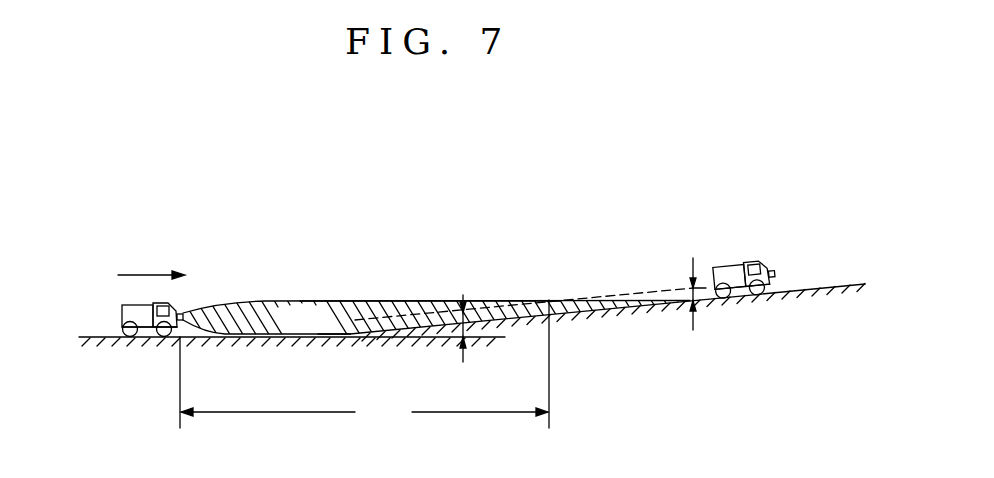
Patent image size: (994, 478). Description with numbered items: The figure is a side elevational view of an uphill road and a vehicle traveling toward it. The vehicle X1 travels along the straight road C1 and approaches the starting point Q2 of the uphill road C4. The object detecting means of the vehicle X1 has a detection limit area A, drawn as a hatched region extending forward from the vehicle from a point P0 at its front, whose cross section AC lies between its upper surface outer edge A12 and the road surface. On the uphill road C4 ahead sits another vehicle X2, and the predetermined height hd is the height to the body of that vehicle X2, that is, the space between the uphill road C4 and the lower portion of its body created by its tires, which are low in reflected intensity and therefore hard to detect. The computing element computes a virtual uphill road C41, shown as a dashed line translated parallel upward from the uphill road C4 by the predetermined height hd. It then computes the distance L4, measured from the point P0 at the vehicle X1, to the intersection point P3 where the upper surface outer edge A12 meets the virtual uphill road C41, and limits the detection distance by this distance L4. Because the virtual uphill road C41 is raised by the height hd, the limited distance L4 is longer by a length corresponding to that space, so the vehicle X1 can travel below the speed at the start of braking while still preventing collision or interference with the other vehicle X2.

The straight road C1 is at (95, 335).
The vehicle X1 is at (147, 331).
The spray start point P0 is at (183, 331).
The starting point of the uphill road Q2 is at (320, 340).
The distance L4 is at (364, 415).
The detection limit area A is at (441, 285).
The blanket cross section AC is at (318, 331).
The upper surface outer edge A12 is at (372, 300).
The intersection point P3 is at (548, 300).
The virtual uphill road C41 is at (643, 290).
The predetermined height hd is at (700, 287).
The another vehicle X2 is at (762, 268).
The uphill road C4 is at (827, 288).